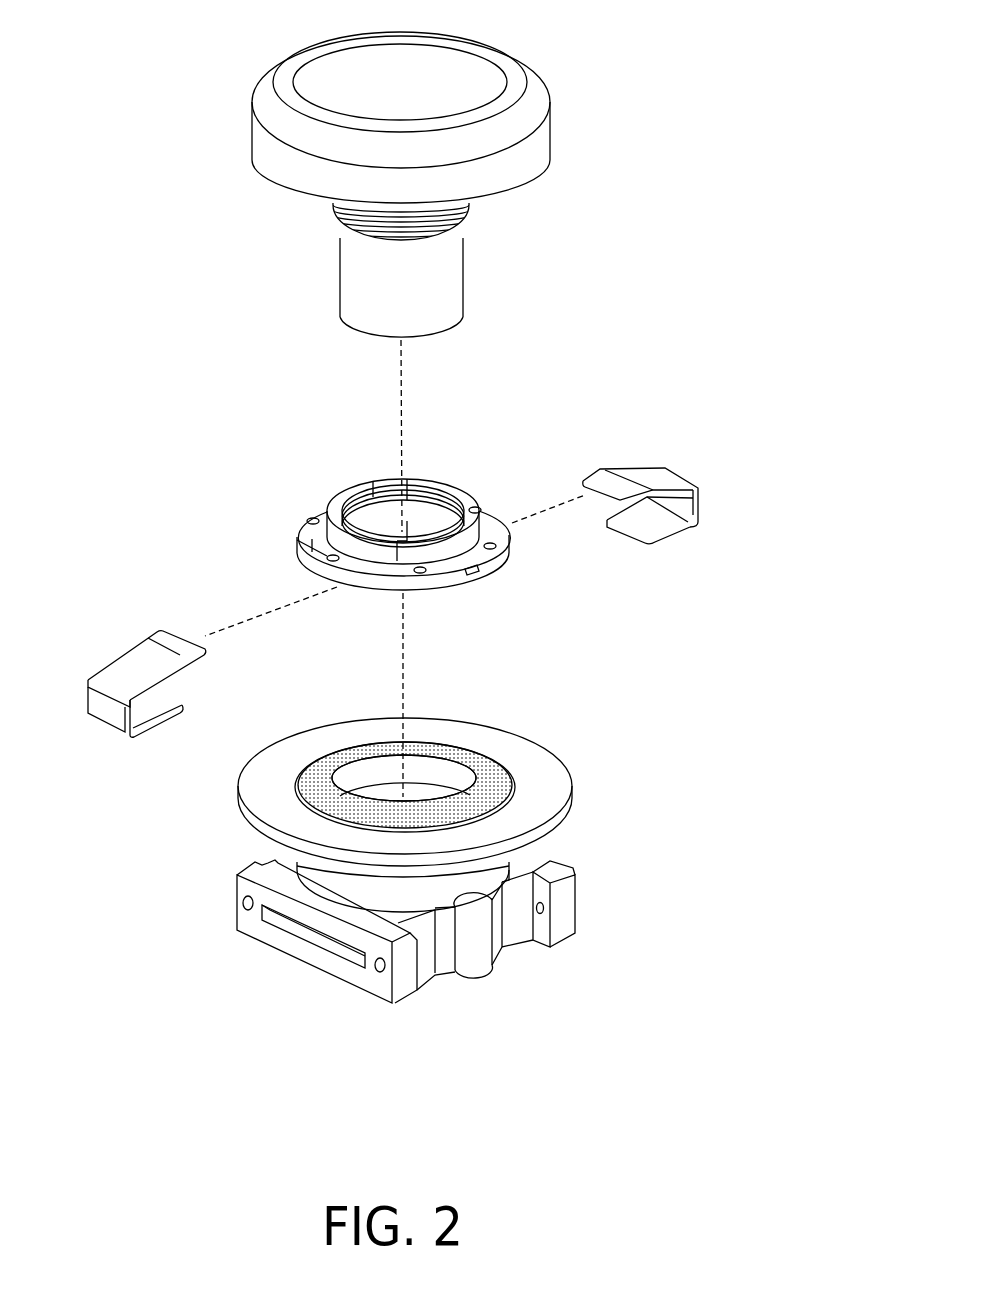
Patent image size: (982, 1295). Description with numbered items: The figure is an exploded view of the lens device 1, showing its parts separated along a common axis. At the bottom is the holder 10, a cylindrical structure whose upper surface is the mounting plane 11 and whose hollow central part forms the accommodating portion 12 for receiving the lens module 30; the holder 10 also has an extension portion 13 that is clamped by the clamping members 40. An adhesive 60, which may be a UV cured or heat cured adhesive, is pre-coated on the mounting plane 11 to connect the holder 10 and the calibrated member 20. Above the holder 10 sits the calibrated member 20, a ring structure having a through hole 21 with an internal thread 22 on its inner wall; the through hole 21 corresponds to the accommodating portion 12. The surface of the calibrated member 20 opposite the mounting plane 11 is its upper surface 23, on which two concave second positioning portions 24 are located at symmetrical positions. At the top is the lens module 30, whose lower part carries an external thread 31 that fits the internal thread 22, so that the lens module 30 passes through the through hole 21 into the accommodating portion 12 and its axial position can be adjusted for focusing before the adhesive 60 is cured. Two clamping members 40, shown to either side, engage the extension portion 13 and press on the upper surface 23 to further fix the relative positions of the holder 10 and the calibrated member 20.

The lens device 1 is at (122, 60).
The holder 10 is at (427, 831).
The mounting plane 11 is at (497, 762).
The accommodating portion 12 is at (423, 752).
The extension portion 13 is at (558, 781).
The calibrated member 20 is at (398, 523).
The through hole 21 is at (416, 530).
The internal thread 22 is at (374, 500).
The upper surface 23 is at (500, 556).
The second positioning portion 24 is at (474, 508).
The lens module 30 is at (311, 58).
The external thread 31 is at (464, 222).
The clamping member 40 is at (699, 486).
The adhesive 60 is at (313, 782).